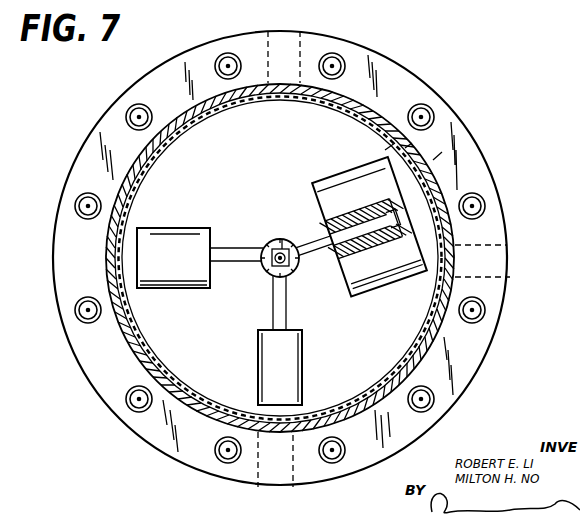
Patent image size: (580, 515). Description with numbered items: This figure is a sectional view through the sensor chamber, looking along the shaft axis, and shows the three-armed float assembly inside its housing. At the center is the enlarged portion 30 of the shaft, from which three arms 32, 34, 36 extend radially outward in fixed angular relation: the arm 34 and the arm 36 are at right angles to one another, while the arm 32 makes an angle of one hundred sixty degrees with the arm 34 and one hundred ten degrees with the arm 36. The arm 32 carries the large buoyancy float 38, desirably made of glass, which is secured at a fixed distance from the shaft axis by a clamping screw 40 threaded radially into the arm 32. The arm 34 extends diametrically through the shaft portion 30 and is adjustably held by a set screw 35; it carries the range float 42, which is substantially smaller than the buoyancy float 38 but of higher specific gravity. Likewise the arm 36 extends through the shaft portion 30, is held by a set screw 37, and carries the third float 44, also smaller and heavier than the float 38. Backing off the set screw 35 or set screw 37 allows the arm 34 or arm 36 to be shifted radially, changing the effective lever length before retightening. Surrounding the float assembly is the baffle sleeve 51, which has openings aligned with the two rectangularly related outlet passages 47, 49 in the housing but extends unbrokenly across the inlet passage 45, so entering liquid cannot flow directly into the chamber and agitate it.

The enlarged portion 30 is at (268, 274).
The arm 32 is at (317, 232).
The arm 34 is at (252, 247).
The set screw 35 is at (282, 240).
The arm 36 is at (287, 312).
The set screw 37 is at (296, 271).
The buoyancy float 38 is at (371, 162).
The clamping screw 40 is at (400, 200).
The range float 42 is at (202, 227).
The third float 44 is at (303, 366).
The inlet passage 45 is at (291, 476).
The outlet passage 47 is at (510, 277).
The outlet passage 49 is at (302, 40).
The baffle sleeve 51 is at (428, 320).